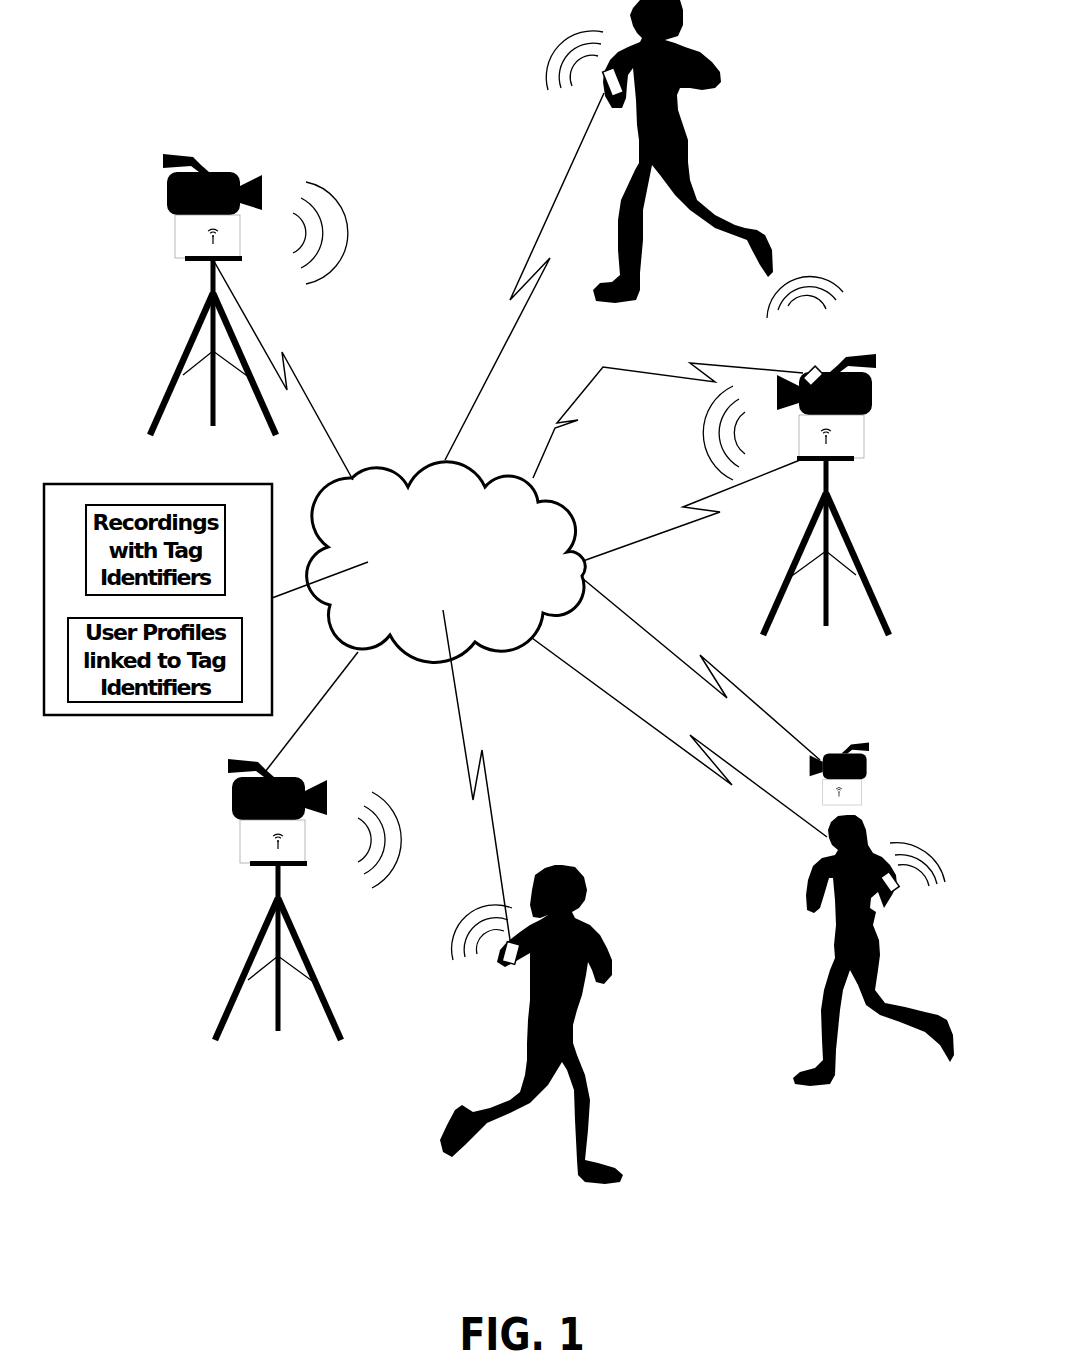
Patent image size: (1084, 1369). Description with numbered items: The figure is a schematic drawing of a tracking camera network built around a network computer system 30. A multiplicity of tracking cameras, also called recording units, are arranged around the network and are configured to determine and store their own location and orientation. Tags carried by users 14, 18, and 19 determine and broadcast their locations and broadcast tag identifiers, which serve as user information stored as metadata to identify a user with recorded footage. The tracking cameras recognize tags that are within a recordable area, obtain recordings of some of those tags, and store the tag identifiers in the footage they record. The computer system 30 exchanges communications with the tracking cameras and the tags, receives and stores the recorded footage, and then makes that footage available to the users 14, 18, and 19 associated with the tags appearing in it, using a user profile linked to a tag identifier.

The user 14 is at (707, 67).
The user 18 is at (870, 818).
The user 19 is at (600, 937).
The network computer system 30 is at (560, 523).